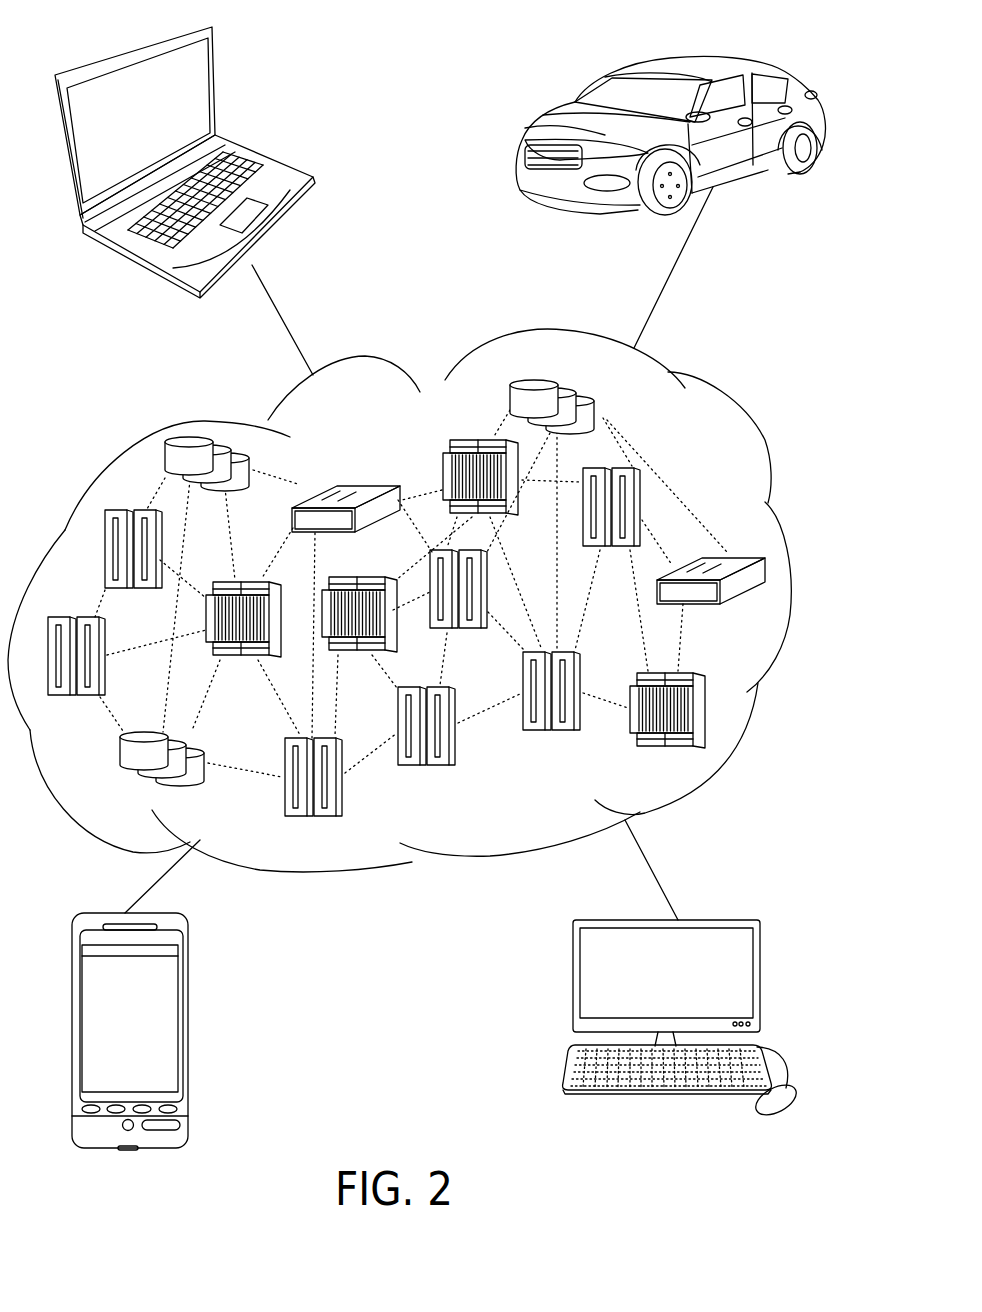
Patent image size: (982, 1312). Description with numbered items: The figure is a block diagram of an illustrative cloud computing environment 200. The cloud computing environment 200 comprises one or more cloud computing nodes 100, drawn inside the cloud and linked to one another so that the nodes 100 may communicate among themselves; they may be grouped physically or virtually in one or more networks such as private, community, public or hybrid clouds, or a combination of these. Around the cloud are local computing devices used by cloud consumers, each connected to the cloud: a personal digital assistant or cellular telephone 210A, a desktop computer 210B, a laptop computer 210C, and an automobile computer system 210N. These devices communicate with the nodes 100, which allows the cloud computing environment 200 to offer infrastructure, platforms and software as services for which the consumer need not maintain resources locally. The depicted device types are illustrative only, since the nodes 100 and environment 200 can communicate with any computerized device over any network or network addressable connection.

The cloud computing node 100 is at (738, 540).
The cloud computing environment 200 is at (405, 600).
The personal digital assistant (PDA) or cellular telephone 210A is at (187, 940).
The desktop computer 210B is at (760, 938).
The laptop computer 210C is at (275, 161).
The automobile computer system 210N is at (775, 71).